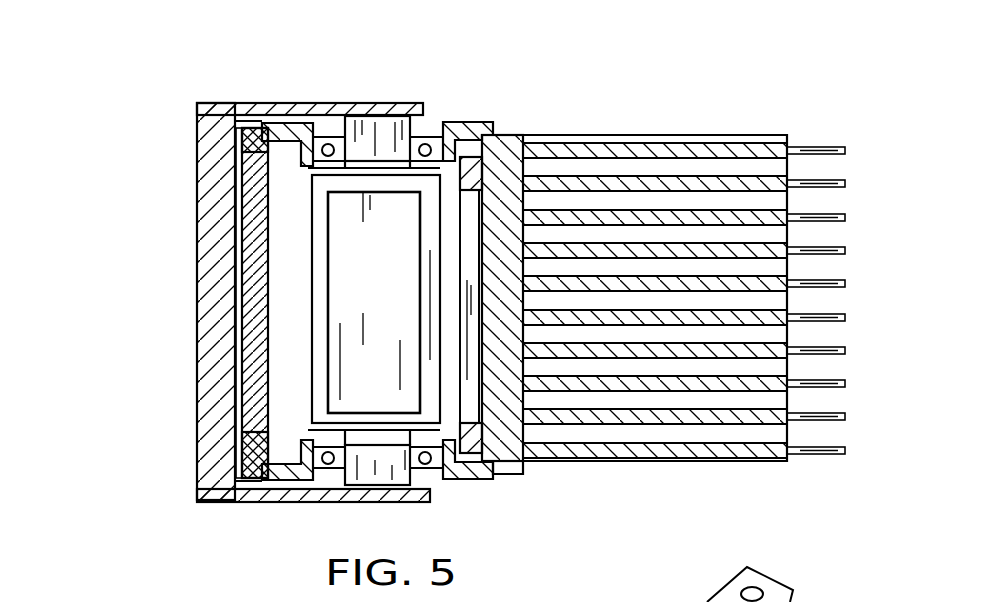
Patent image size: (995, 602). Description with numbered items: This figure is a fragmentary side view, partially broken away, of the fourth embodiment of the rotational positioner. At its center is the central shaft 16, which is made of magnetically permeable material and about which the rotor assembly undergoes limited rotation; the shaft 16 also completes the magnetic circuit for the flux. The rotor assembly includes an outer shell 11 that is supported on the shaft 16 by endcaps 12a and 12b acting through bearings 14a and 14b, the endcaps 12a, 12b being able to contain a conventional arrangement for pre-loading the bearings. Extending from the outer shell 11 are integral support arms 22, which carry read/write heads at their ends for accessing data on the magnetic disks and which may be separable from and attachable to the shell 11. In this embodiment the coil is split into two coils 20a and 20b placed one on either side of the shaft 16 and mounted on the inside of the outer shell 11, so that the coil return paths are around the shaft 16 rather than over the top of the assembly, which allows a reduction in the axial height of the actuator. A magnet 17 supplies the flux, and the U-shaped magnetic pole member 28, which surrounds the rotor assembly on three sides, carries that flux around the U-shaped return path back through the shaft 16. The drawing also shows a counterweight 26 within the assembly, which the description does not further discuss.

The magnetic pole member 28 is at (208, 153).
The endcap 12a is at (325, 103).
The endcap 12b is at (213, 492).
The bearing 14a is at (431, 137).
The bearing 14b is at (430, 463).
The coil 20a is at (490, 157).
The coil 20b is at (237, 196).
The magnet 17 is at (350, 297).
The central shaft 16 is at (318, 361).
The counterweight 26 is at (255, 396).
The support arms 22 is at (714, 141).
The outer shell 11 is at (513, 470).